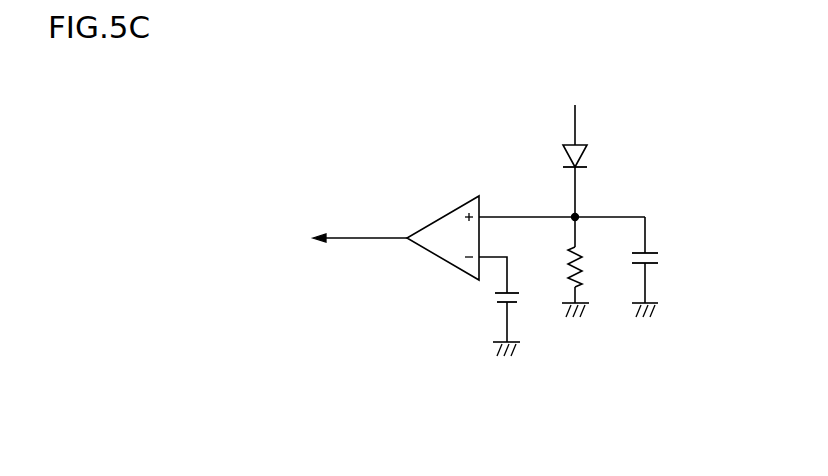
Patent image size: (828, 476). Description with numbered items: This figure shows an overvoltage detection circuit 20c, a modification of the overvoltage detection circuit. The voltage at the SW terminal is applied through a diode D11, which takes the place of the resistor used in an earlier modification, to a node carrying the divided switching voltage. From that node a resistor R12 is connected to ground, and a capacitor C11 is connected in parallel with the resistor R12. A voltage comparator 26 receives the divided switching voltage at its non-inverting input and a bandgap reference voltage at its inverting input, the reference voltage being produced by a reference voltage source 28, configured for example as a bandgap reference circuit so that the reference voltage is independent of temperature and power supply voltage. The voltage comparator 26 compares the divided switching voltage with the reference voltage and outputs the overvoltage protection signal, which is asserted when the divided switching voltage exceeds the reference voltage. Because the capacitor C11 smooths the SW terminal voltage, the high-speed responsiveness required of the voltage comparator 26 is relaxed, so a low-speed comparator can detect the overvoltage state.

The overvoltage detection circuit 20c is at (465, 398).
The voltage comparator 26 is at (447, 213).
The reference voltage source 28 is at (494, 298).
The diode D11 is at (589, 152).
The resistor R12 is at (583, 263).
The capacitor C11 is at (661, 258).